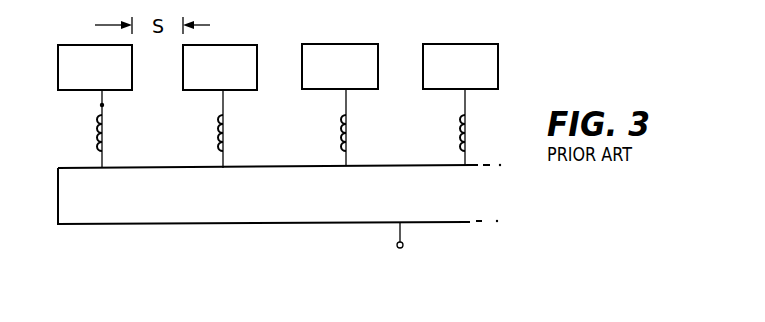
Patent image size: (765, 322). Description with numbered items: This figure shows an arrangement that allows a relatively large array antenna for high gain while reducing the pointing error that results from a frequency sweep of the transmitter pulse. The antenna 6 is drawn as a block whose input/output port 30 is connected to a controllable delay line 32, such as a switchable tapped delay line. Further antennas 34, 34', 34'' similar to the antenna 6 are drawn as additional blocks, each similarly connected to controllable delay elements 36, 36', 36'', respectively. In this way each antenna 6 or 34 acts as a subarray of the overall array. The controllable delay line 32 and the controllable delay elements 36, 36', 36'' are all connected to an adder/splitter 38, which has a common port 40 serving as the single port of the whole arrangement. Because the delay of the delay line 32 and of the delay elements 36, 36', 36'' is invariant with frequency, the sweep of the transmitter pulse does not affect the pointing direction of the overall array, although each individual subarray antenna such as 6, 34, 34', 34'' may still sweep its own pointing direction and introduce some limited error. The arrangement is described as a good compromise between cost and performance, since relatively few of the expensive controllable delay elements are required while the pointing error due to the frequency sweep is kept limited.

The antenna 6 is at (76, 45).
The input/output port 30 is at (105, 105).
The controllable delay line 32 is at (105, 140).
The antenna 34 is at (221, 63).
The antenna 34' is at (340, 63).
The antenna 34'' is at (460, 63).
The controllable delay element 36 is at (237, 141).
The controllable delay element 36' is at (361, 140).
The controllable delay element 36'' is at (487, 140).
The adder/splitter 38 is at (73, 168).
The common port 40 is at (403, 243).